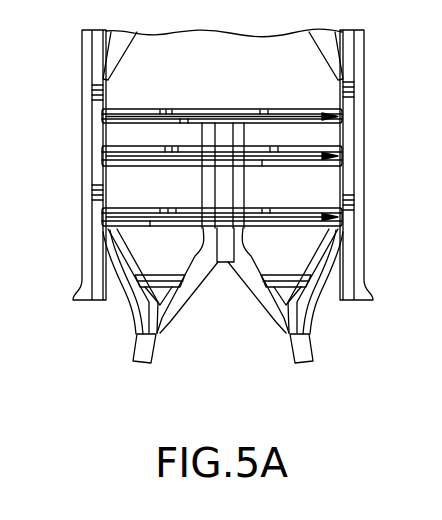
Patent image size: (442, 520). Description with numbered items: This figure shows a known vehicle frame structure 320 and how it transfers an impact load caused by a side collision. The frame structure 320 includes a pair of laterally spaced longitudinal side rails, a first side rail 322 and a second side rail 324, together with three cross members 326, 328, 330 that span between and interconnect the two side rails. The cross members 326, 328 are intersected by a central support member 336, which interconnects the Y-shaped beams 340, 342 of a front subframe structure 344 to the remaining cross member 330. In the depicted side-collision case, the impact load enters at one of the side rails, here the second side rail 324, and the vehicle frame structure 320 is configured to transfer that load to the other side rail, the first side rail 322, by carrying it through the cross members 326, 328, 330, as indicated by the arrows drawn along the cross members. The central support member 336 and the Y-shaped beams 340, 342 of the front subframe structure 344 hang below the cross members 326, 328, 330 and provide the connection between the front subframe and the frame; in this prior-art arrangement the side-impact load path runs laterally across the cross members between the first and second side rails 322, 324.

The vehicle frame structure 320 is at (85, 332).
The first side rail 322 is at (365, 162).
The second side rail 324 is at (82, 170).
The cross member 326 is at (148, 232).
The cross member 328 is at (148, 169).
The cross member 330 is at (184, 106).
The central support member 336 is at (248, 195).
The Y-shaped beam 340 is at (258, 310).
The Y-shaped beam 342 is at (178, 317).
The front subframe structure 344 is at (324, 384).